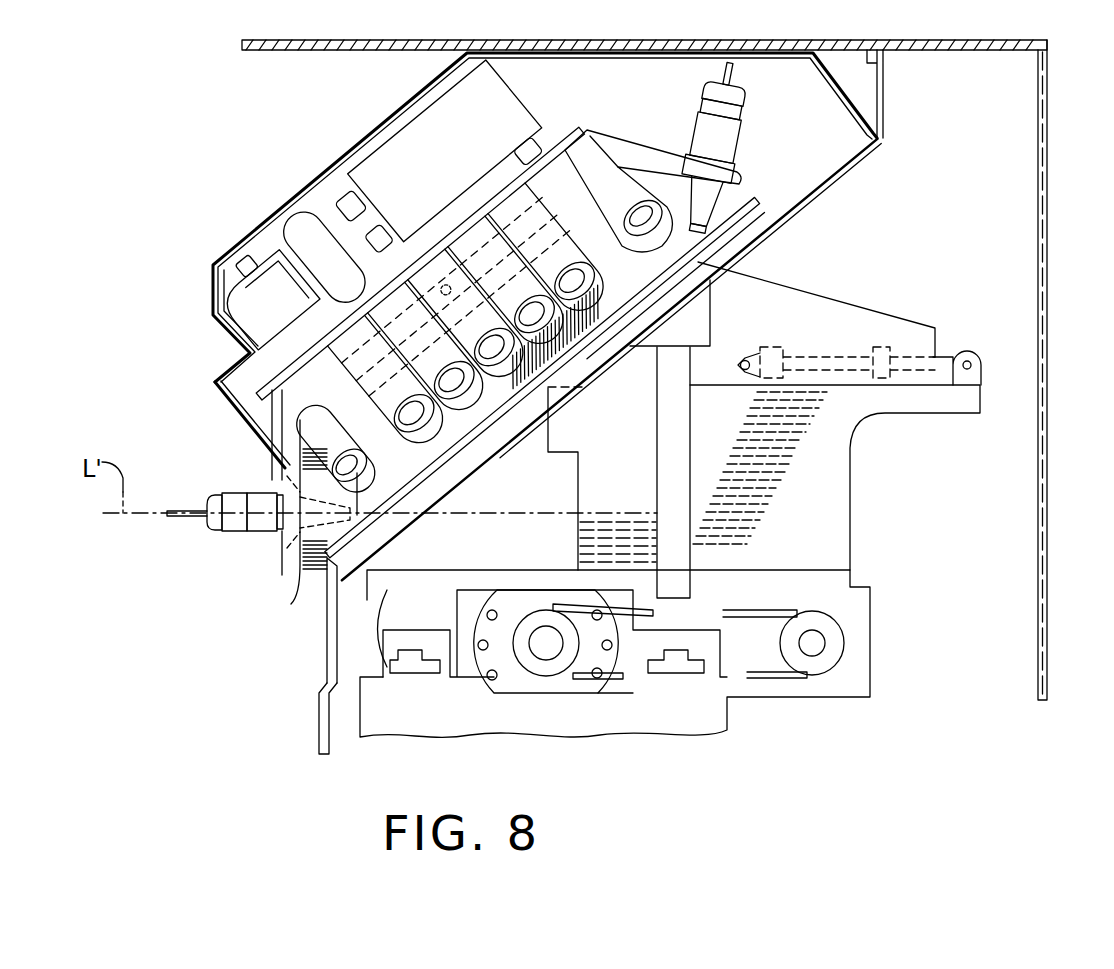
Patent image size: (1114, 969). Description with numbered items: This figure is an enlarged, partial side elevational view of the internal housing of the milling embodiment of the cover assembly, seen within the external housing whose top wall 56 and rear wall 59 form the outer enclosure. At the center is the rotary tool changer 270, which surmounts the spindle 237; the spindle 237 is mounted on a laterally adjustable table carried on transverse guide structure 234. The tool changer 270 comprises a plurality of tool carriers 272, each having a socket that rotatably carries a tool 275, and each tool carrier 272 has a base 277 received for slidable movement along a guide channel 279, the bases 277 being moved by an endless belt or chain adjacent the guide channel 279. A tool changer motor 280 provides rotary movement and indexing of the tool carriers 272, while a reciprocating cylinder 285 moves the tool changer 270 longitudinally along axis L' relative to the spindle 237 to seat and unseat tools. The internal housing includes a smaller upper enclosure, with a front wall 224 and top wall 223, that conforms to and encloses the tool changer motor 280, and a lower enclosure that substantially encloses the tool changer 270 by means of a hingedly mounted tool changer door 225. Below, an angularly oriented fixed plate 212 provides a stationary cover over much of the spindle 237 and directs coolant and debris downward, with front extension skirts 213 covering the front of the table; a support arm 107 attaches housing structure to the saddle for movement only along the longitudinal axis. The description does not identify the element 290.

The top wall 56 is at (965, 38).
The rear wall 59 is at (1048, 265).
The rotary tool changer 270 is at (652, 86).
The top wall 223 is at (362, 138).
The tool changer motor 280 is at (257, 287).
The front wall 224 is at (225, 333).
The tool changer door 225 is at (226, 423).
The guide channel 279 is at (272, 402).
The base 277 is at (348, 415).
The reciprocating cylinder 285 is at (845, 353).
The support arm 107 is at (668, 407).
The fixed plate 212 is at (478, 475).
The tool carrier 272 is at (385, 485).
The tool 275 is at (227, 536).
The spindle 237 is at (295, 598).
The front extension skirt 213 is at (322, 618).
The transverse guide structure 234 is at (385, 592).
The cover plate 290 is at (318, 727).